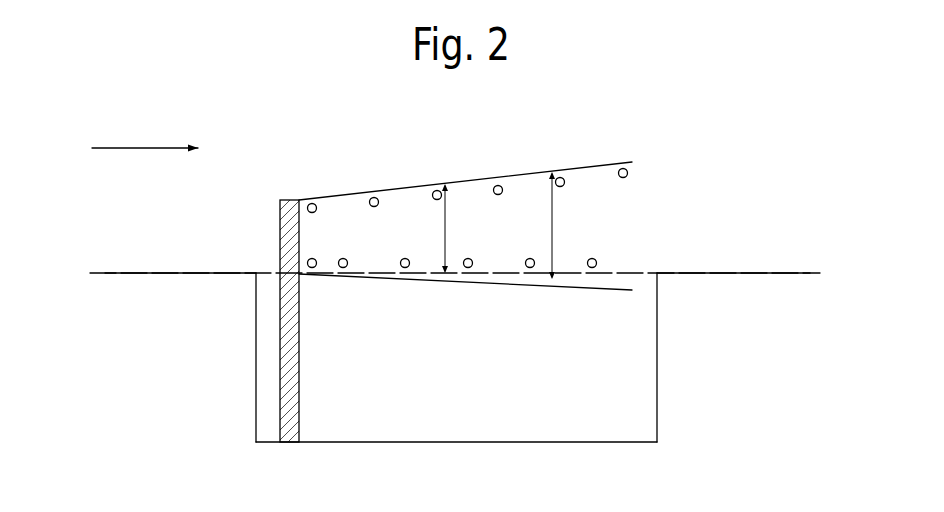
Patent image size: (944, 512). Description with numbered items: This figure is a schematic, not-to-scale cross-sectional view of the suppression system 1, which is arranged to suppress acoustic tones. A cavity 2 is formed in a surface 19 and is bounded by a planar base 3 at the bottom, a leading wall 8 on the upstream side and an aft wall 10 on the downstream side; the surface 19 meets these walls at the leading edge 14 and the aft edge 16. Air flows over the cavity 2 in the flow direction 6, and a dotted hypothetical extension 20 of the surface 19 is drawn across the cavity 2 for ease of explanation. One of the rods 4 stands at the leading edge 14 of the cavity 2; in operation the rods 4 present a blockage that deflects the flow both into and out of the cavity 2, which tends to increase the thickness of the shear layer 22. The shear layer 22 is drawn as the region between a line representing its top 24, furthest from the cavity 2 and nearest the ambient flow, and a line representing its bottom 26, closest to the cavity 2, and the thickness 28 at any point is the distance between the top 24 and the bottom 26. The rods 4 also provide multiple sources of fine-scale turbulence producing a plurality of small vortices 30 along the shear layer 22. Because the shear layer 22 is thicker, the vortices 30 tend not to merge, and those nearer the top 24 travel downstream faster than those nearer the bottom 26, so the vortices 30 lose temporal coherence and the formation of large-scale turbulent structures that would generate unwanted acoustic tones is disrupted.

The suppression system 1 is at (692, 138).
The cavity 2 is at (345, 412).
The planar base 3 is at (467, 443).
The rod 4 is at (280, 211).
The flow direction 6 is at (127, 147).
The leading wall 8 is at (256, 378).
The aft (trailing) wall 10 is at (659, 366).
The leading edge 14 is at (256, 274).
The aft (trailing) edge 16 is at (658, 270).
The surface 19 is at (745, 272).
The hypothetical extension 20 is at (622, 272).
The shear layer 22 is at (388, 225).
The top of the shear layer 24 is at (527, 170).
The bottom of the shear layer 26 is at (527, 290).
The thickness of the shear layer 28 is at (450, 218).
The vortices 30 is at (312, 203).